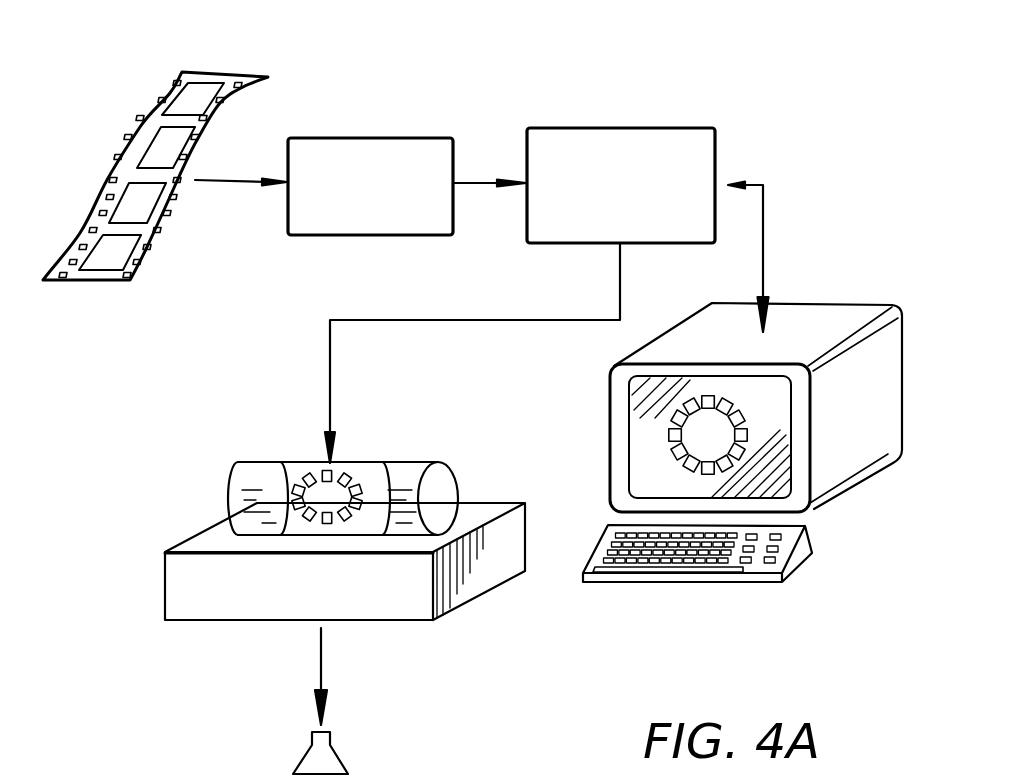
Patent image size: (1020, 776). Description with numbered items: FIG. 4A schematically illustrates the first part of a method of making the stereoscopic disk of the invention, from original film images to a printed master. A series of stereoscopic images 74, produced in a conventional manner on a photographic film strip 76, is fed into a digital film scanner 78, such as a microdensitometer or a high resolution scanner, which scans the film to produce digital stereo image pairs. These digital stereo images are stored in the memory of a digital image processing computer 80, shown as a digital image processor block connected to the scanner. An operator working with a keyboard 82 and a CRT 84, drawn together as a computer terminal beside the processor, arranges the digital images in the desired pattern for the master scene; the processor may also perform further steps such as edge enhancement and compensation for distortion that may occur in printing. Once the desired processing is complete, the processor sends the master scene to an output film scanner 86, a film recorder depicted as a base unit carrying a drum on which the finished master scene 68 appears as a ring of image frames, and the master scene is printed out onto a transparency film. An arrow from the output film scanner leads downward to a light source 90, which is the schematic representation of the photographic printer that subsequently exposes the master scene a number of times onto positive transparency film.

The master scene 68 is at (372, 470).
The stereoscopic images 74 is at (142, 153).
The photographic film strip 76 is at (243, 78).
The digital film scanner 78 is at (410, 147).
The digital image processing computer 80 is at (610, 132).
The keyboard 82 is at (733, 585).
The CRT 84 is at (828, 318).
The output film scanner 86 is at (170, 578).
The light source 90 is at (337, 748).